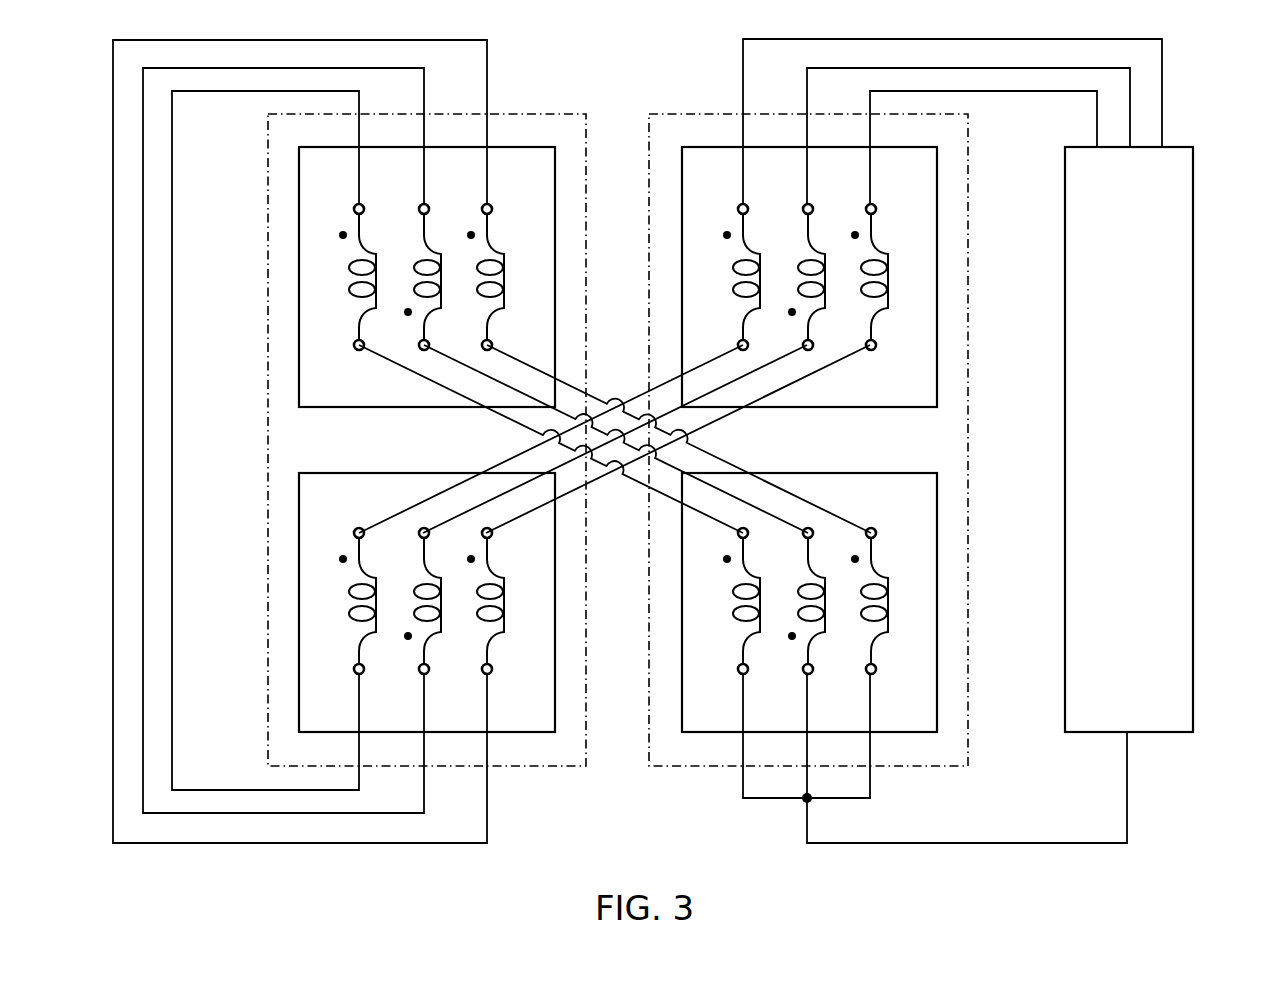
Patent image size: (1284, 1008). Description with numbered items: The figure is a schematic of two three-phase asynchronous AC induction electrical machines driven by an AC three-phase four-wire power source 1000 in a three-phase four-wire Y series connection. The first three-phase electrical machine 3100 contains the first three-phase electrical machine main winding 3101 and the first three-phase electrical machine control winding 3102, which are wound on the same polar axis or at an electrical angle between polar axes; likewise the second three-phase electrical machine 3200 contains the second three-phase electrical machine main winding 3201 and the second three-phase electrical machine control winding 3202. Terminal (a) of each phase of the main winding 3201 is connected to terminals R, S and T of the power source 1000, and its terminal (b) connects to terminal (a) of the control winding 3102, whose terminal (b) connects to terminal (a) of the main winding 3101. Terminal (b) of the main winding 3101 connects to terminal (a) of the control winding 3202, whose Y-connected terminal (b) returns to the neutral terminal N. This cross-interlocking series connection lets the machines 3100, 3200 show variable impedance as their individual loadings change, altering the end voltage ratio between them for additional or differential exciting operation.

The AC 3-phase 4-wire power source 1000 is at (1193, 413).
The first 3-phase electrical machine 3100 is at (265, 465).
The first 3-phase electrical machine main winding 3101 is at (299, 280).
The first 3-phase electrical machine control winding 3102 is at (299, 628).
The second 3-phase electrical machine 3200 is at (969, 470).
The second 3-phase electrical machine main winding 3201 is at (937, 278).
The second 3-phase electrical machine control winding 3202 is at (937, 650).